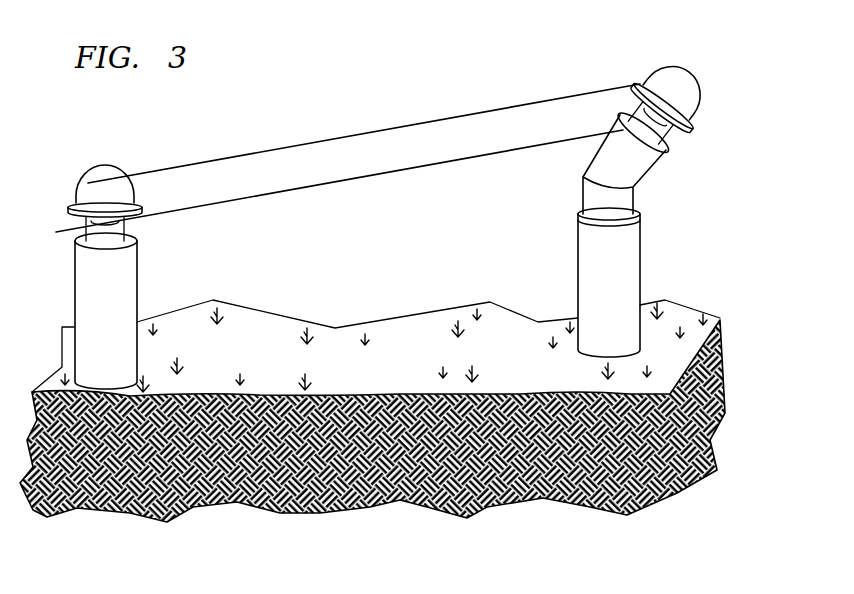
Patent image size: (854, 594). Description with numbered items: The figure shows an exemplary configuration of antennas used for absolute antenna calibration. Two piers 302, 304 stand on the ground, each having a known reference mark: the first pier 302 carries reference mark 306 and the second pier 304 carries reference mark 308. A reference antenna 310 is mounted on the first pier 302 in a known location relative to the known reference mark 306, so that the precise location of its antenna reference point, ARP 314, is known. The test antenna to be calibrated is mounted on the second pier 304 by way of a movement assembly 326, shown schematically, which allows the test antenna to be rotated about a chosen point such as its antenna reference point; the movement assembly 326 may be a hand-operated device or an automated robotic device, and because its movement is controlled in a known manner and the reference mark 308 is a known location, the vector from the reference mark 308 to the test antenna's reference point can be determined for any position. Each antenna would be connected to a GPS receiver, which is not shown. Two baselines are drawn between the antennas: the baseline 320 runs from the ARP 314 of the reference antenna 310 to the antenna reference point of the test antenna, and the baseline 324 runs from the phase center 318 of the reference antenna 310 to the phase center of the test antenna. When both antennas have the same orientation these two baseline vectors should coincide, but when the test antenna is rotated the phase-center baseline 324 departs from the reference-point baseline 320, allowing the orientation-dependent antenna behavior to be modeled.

The pier 302 is at (138, 268).
The pier 304 is at (577, 248).
The reference mark 306 is at (103, 241).
The reference mark 308 is at (607, 209).
The reference antenna 310 is at (80, 198).
The ARP 314 is at (71, 231).
The phase center 318 is at (82, 177).
The baseline 320 is at (348, 187).
The baseline 324 is at (297, 147).
The movement assembly 326 is at (598, 165).